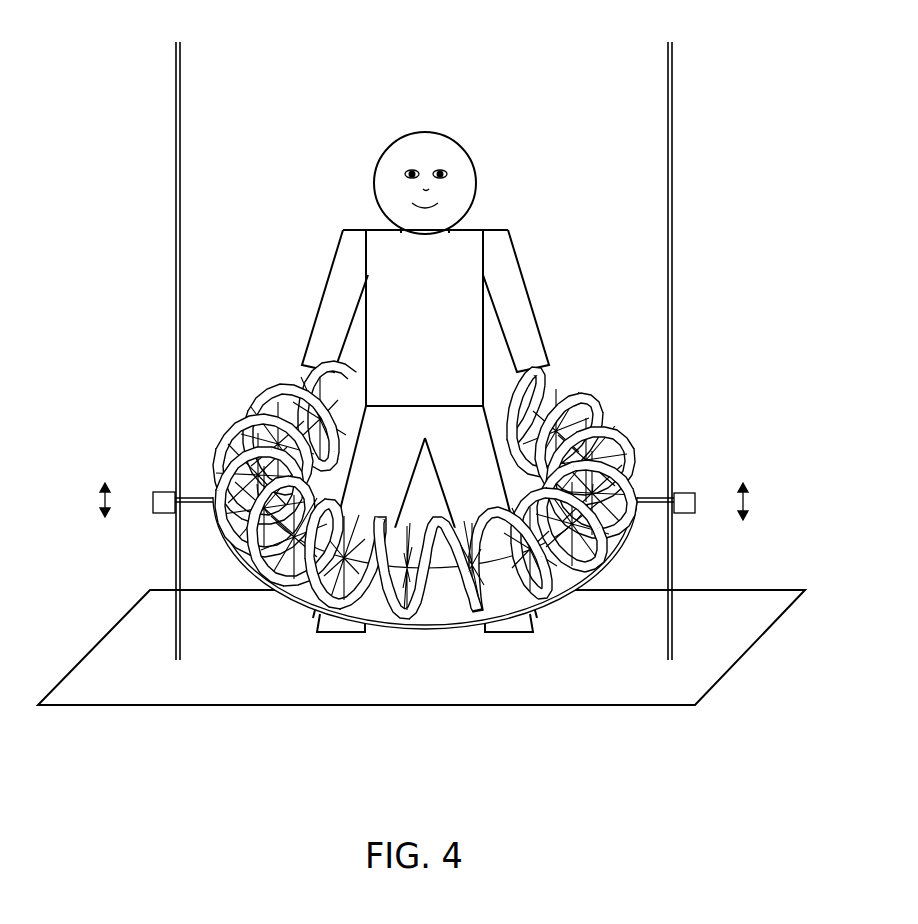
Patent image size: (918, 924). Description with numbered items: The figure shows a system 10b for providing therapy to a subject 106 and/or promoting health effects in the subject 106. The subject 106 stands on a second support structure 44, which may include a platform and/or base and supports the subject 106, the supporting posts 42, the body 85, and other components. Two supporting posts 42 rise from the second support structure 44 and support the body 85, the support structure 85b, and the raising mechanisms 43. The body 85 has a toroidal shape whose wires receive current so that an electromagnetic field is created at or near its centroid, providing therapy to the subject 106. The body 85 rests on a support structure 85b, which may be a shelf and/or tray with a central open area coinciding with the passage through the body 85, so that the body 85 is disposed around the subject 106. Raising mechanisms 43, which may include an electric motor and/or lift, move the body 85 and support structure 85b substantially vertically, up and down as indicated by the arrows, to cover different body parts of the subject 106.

The system 10b is at (421, 397).
The supporting posts 42 is at (175, 358).
The raising mechanism 43 is at (153, 502).
The second support structure 44 is at (485, 708).
The body 85 is at (630, 452).
The support structure 85b is at (625, 520).
The subject 106 is at (508, 278).